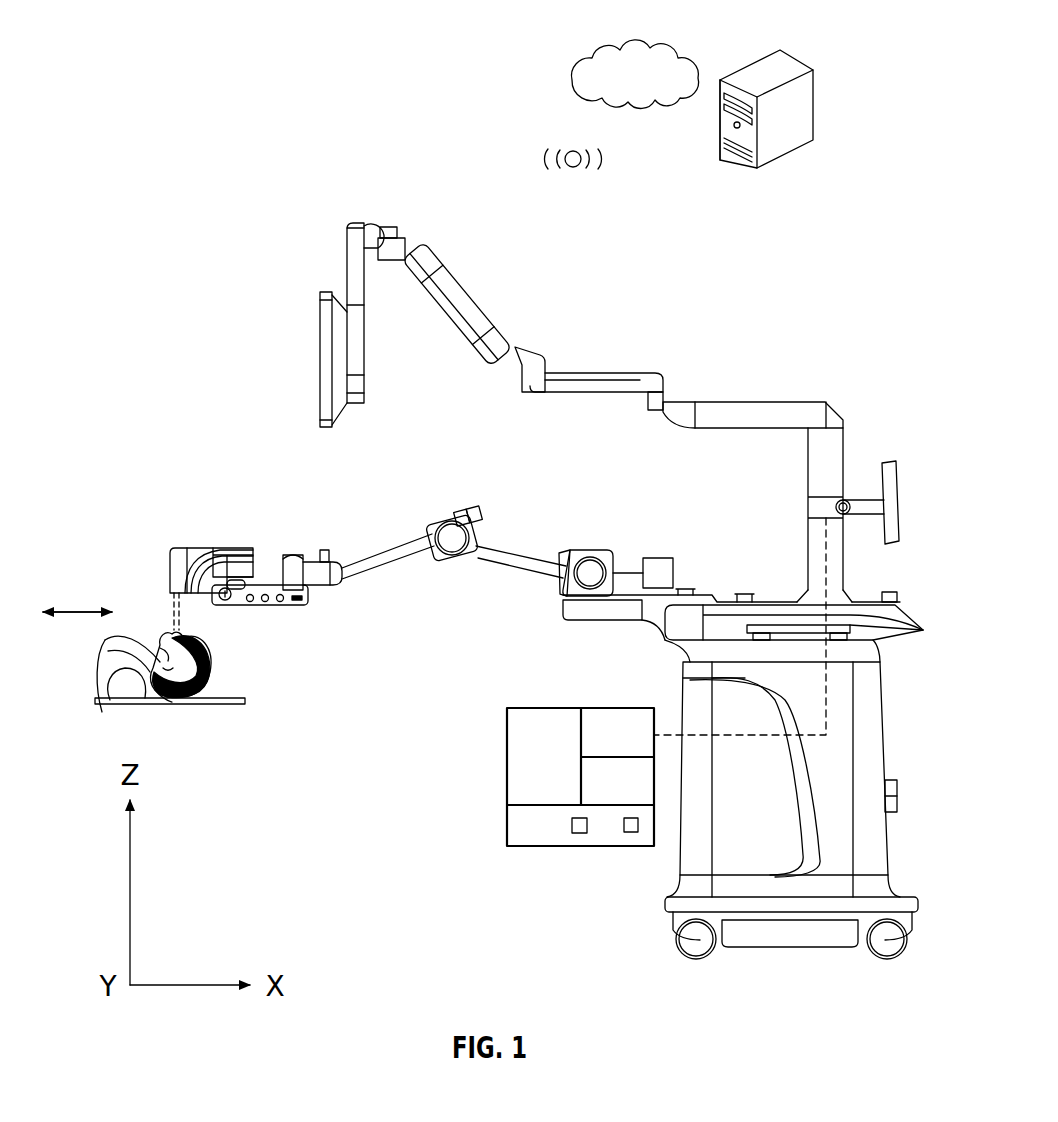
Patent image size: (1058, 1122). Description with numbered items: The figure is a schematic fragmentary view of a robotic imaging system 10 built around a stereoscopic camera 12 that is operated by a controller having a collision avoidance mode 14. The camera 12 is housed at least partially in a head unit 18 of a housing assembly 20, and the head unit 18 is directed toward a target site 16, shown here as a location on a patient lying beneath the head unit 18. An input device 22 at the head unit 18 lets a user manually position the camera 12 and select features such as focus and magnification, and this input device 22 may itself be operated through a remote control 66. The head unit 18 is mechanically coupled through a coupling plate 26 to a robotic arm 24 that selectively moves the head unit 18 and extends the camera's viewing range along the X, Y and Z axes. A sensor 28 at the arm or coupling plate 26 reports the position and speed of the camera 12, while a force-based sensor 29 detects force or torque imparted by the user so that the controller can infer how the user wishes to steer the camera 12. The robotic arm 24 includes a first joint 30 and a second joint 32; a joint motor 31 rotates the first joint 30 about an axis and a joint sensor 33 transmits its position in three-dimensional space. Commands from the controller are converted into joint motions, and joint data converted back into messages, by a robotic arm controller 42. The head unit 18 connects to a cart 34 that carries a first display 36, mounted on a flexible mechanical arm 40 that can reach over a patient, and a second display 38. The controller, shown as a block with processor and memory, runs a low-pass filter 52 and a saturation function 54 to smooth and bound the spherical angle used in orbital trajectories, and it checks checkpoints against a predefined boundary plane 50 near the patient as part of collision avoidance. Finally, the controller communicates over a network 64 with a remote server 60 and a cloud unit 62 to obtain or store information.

The robotic imaging system 10 is at (130, 464).
The camera 12 is at (247, 558).
The collision avoidance mode 14 is at (545, 807).
The target site 16 is at (195, 630).
The head unit 18 is at (183, 548).
The housing assembly 20 is at (657, 316).
The input device 22 is at (226, 556).
The robotic arm 24 is at (412, 530).
The coupling plate 26 is at (283, 602).
The sensor 28 is at (238, 586).
The force-based sensor 29 is at (305, 599).
The first joint 30 is at (450, 580).
The joint motor 31 is at (458, 513).
The second joint 32 is at (598, 549).
The joint sensor 33 is at (480, 518).
The cart 34 is at (888, 710).
The first display 36 is at (292, 343).
The second display 38 is at (902, 506).
The flexible mechanical arm 40 is at (470, 268).
The robotic arm controller 42 is at (677, 572).
The boundary plane 50 is at (82, 616).
The low-pass filter 52 is at (580, 834).
The saturation function 54 is at (628, 834).
The remote server 60 is at (808, 62).
The cloud unit 62 is at (600, 42).
The network 64 is at (554, 146).
The remote control 66 is at (889, 592).